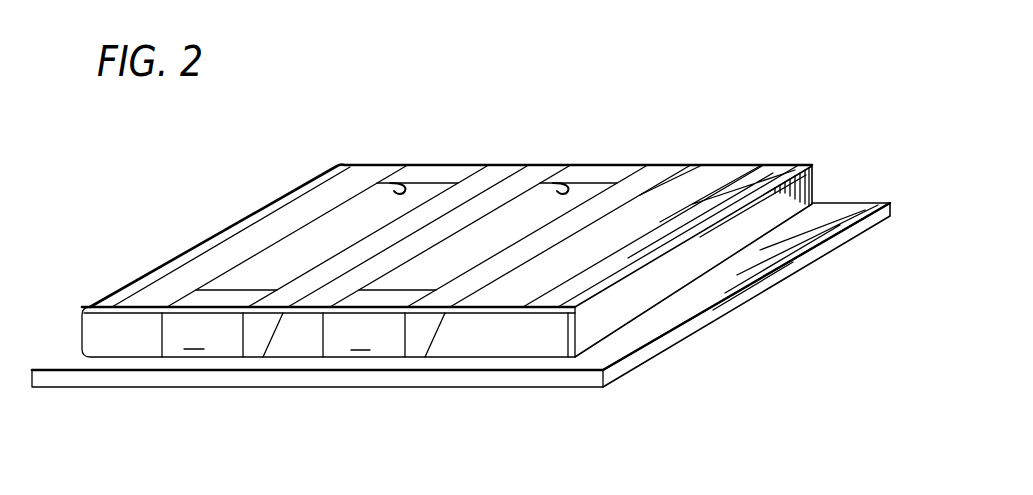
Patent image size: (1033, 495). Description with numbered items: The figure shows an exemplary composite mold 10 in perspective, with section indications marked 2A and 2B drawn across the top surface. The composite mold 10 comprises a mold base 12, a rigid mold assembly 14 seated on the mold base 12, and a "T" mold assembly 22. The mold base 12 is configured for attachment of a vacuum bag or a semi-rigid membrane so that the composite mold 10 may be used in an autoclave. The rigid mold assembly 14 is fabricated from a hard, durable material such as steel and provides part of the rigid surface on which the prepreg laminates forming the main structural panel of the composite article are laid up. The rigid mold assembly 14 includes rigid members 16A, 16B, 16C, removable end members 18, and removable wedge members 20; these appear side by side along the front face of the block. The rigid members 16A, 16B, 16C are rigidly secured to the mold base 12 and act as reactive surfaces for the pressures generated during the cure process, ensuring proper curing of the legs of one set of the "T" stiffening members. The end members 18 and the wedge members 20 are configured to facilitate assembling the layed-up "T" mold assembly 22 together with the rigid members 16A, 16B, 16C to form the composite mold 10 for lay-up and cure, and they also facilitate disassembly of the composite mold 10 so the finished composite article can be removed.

The composite mold 10 is at (188, 239).
The mold base 12 is at (720, 313).
The rigid mold assembly 14 is at (714, 160).
The rigid member 16A is at (501, 350).
The rigid member 16B is at (313, 350).
The rigid member 16C is at (141, 349).
The removable end member 18 is at (452, 172).
The removable wedge member 20 is at (268, 339).
The T mold assembly 22 is at (406, 186).
The section line 2A- 2A is at (412, 245).
The section line 2B- 2B is at (200, 270).